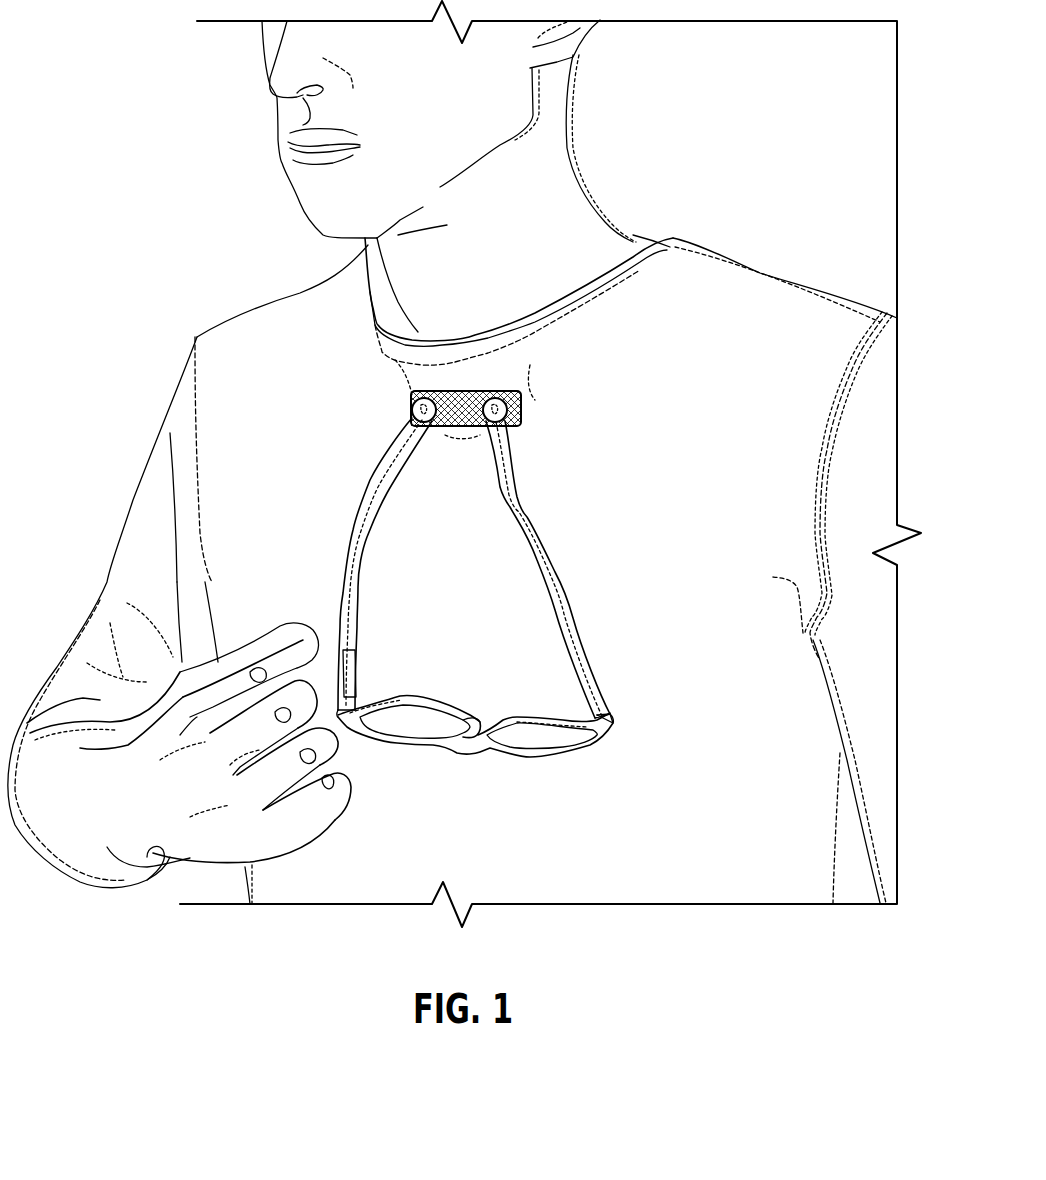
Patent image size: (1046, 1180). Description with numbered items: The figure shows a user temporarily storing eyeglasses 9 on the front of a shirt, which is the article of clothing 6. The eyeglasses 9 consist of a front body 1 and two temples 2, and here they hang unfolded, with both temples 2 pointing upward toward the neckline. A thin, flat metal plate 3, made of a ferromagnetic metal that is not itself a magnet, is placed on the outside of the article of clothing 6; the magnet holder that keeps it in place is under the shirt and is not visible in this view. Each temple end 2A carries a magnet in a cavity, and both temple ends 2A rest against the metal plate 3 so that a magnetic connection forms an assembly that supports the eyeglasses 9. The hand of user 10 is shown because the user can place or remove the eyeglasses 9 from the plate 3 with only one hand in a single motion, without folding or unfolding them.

The front body of eyeglasses 1 is at (492, 844).
The temple 2 is at (583, 558).
The temple end 2A is at (505, 440).
The plate 3 is at (470, 403).
The article of clothing 6 is at (262, 432).
The eyeglasses 9 is at (410, 752).
The hand of user 10 is at (193, 827).